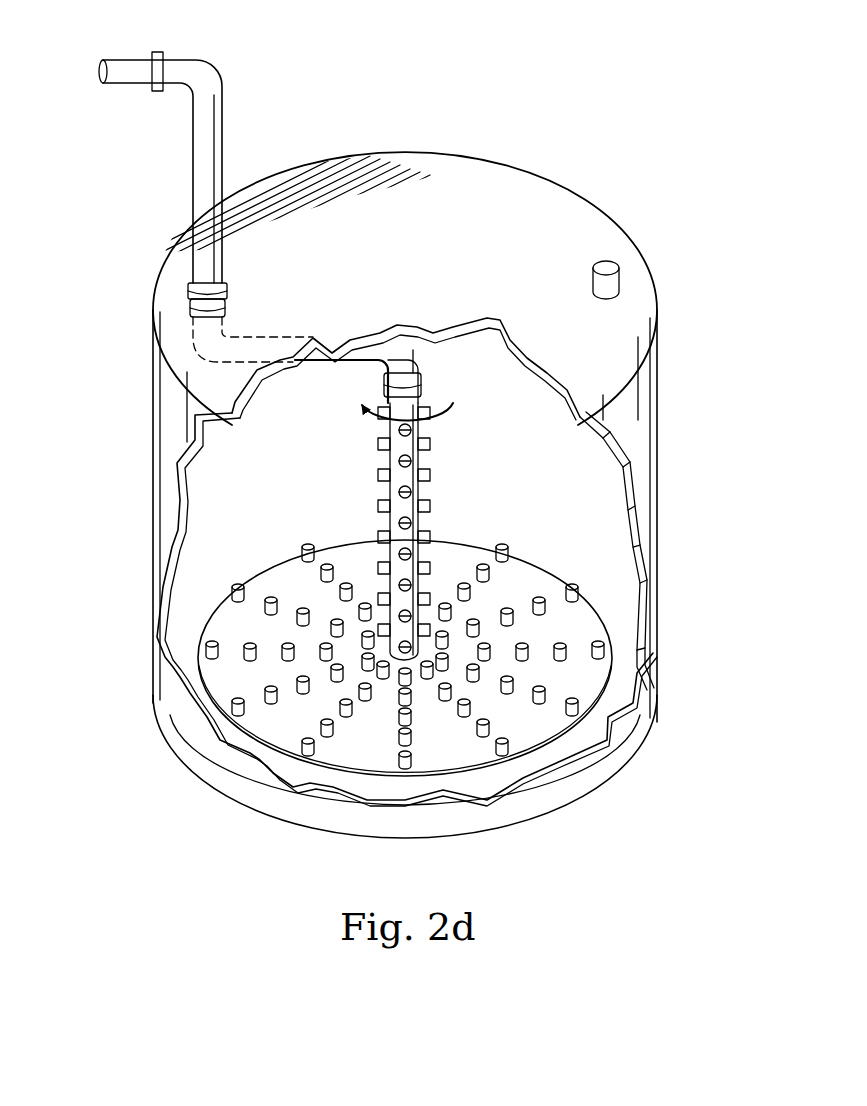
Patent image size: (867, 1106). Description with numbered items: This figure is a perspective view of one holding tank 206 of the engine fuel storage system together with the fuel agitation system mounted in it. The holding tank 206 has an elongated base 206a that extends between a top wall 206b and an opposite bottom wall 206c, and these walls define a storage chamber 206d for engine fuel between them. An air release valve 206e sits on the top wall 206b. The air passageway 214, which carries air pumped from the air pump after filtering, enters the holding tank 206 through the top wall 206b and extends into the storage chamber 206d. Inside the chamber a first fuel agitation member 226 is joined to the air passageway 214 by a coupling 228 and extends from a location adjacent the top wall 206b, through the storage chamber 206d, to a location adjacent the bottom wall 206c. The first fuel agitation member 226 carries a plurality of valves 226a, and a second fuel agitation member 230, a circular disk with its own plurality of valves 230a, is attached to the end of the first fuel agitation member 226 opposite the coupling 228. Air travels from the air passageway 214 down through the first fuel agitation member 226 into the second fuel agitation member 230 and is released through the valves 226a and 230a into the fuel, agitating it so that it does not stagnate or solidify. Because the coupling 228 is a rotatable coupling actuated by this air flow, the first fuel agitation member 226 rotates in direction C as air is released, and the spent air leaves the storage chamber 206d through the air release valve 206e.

The holding tank 206 is at (603, 204).
The elongated base 206a is at (657, 530).
The top wall 206b is at (500, 172).
The bottom wall 206c is at (575, 805).
The storage chamber 206d is at (230, 487).
The air release valve 206e is at (613, 268).
The air passageway 214 is at (185, 58).
The coupling 228 is at (420, 385).
The first fuel agitation member 226 is at (401, 531).
The valves 226a is at (432, 450).
The second fuel agitation member 230 is at (545, 560).
The valves 230a is at (302, 548).
The direction of rotation C is at (352, 420).